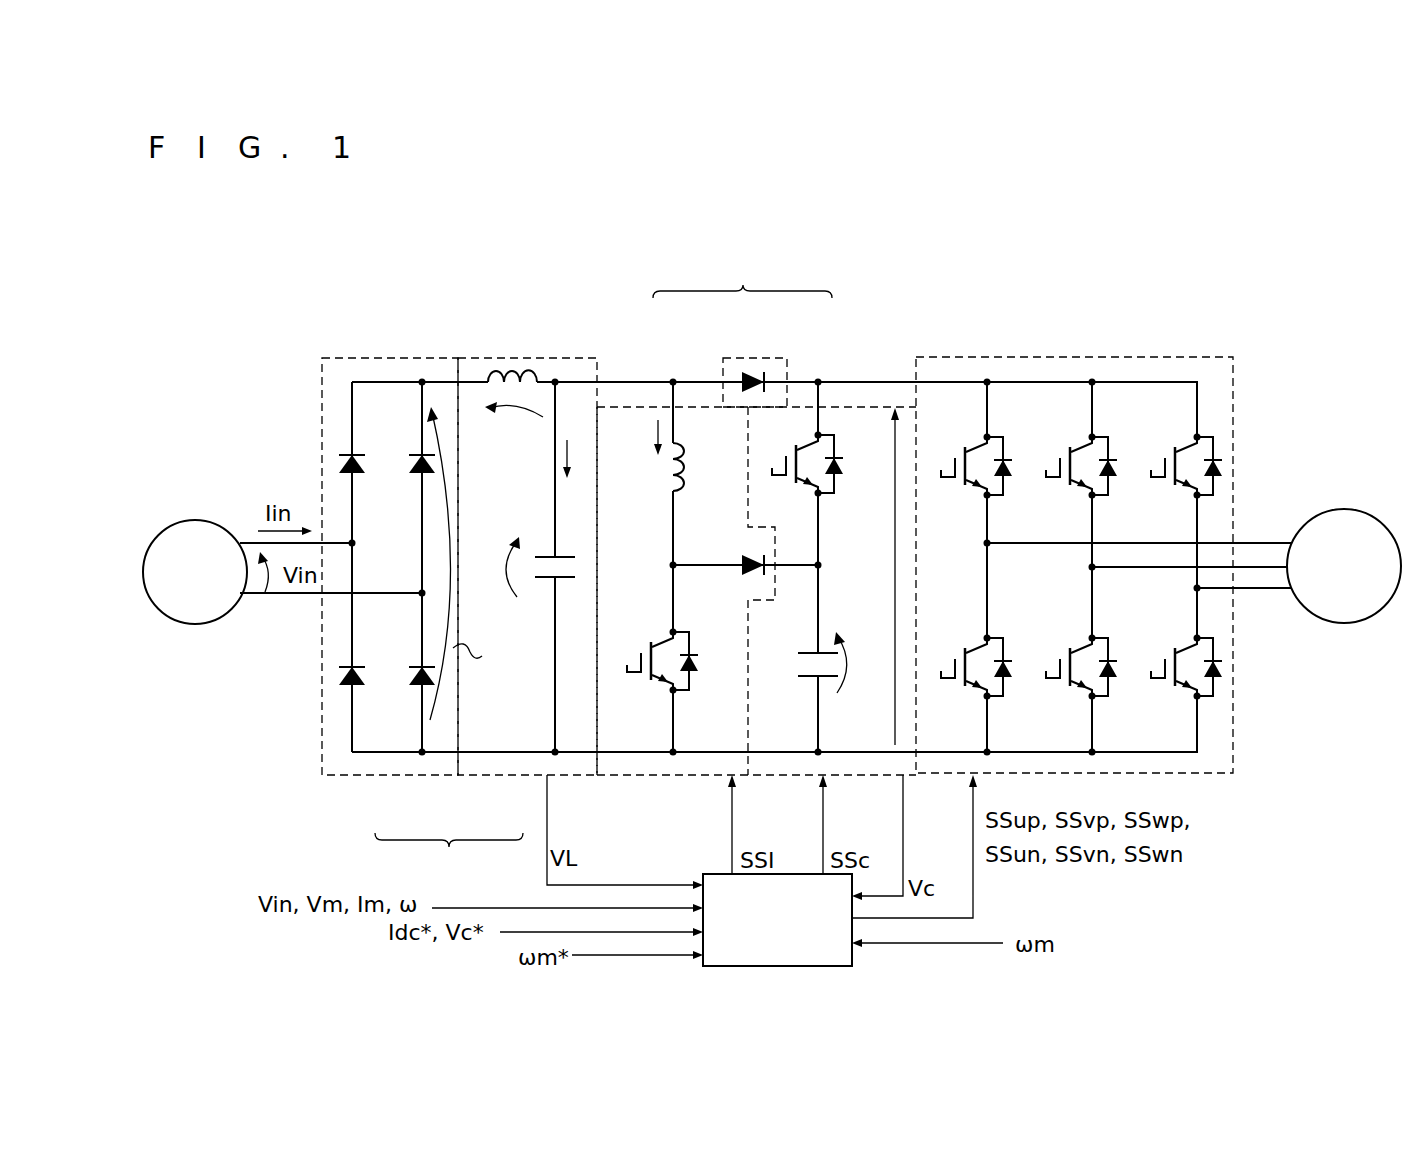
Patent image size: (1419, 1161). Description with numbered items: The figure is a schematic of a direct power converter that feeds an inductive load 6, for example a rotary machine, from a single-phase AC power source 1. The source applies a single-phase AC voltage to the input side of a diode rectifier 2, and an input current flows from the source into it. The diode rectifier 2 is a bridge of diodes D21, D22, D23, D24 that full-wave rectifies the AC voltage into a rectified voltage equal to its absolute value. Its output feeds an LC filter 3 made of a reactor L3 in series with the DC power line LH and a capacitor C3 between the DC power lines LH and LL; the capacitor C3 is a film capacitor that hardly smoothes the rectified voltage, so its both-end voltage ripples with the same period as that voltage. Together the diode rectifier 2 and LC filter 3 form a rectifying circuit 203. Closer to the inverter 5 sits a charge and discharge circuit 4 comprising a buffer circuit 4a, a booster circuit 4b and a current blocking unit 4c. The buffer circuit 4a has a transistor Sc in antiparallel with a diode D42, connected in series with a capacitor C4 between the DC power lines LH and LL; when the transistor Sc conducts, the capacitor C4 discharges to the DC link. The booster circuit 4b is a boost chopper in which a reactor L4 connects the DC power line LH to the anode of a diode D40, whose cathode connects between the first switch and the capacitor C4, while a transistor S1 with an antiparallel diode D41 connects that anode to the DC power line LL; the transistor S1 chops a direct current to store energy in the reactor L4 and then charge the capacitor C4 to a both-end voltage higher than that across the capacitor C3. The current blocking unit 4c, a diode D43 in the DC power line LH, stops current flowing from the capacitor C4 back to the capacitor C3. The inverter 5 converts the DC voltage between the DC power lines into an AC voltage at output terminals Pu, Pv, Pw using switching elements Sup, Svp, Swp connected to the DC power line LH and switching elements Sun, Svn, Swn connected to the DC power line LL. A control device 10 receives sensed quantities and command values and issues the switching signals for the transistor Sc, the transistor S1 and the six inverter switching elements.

The single-phase AC power source 1 is at (208, 532).
The diode rectifier 2 is at (426, 597).
The LC filter 3 is at (527, 574).
The rectifying circuit 203 is at (459, 597).
The charge and discharge circuit 4 is at (756, 544).
The buffer circuit 4a is at (798, 532).
The booster circuit 4b is at (707, 541).
The current blocking unit 4c is at (743, 382).
The inverter 5 is at (1104, 536).
The inductive load 6 is at (1362, 522).
The control device 10 is at (852, 960).
The reactor L3 is at (517, 370).
The capacitor C3 is at (542, 555).
The reactor L4 is at (672, 470).
The capacitor C4 is at (808, 652).
The diode D21 is at (370, 462).
The diode D22 is at (370, 672).
The diode D23 is at (412, 475).
The diode D24 is at (414, 690).
The diode D40 is at (740, 557).
The diode D41 is at (690, 672).
The diode D42 is at (843, 465).
The diode D43 is at (752, 398).
The transistor S1 is at (662, 653).
The transistor Sc is at (806, 471).
The switching element Sup is at (969, 460).
The switching element Svp is at (1074, 460).
The switching element Swp is at (1179, 460).
The switching element Sun is at (969, 661).
The switching element Svn is at (1074, 661).
The switching element Swn is at (1179, 661).
The DC power line LH is at (870, 382).
The DC power line LL is at (845, 753).
The output terminal Pu is at (1005, 546).
The output terminal Pv is at (1118, 570).
The output terminal Pw is at (1262, 590).